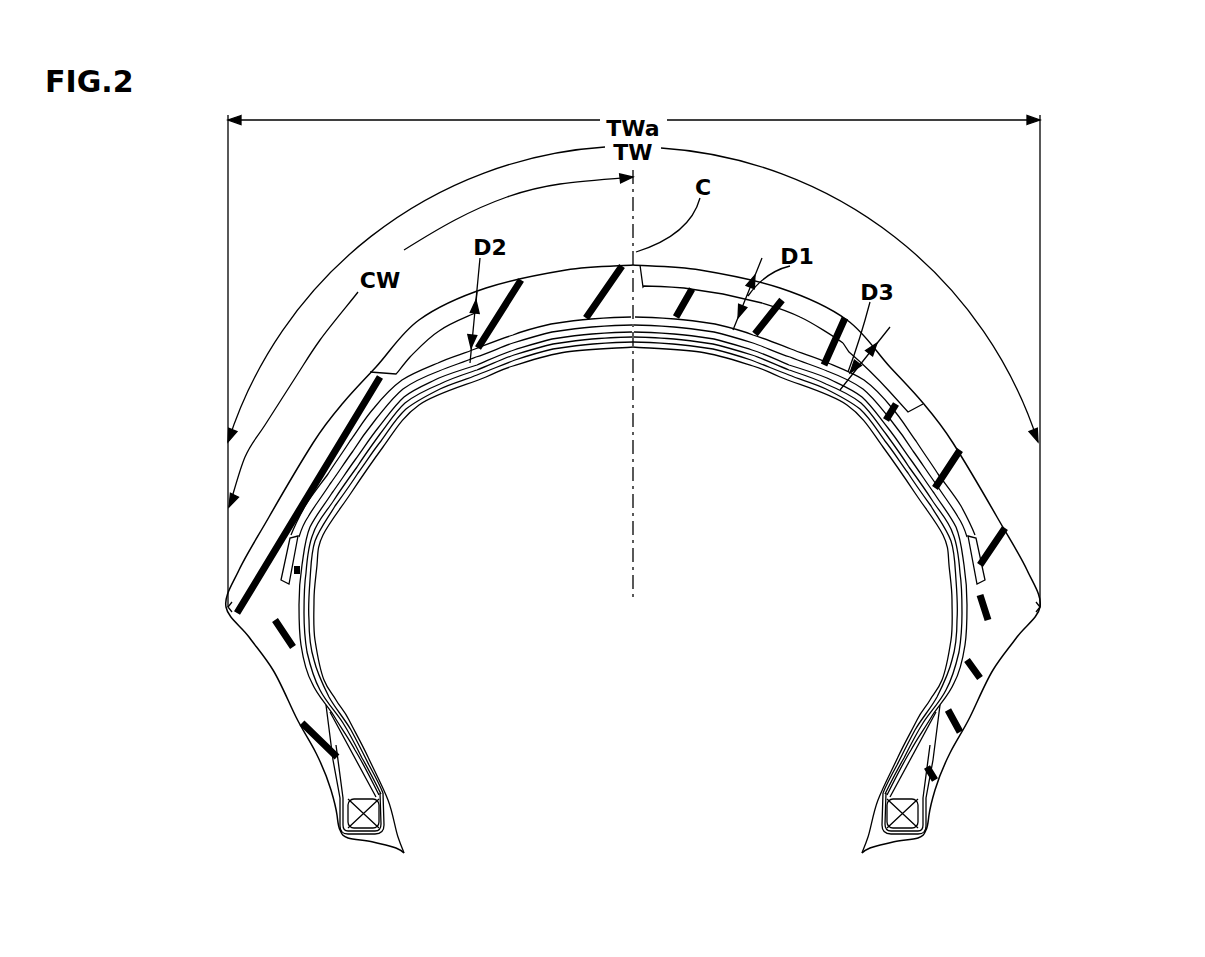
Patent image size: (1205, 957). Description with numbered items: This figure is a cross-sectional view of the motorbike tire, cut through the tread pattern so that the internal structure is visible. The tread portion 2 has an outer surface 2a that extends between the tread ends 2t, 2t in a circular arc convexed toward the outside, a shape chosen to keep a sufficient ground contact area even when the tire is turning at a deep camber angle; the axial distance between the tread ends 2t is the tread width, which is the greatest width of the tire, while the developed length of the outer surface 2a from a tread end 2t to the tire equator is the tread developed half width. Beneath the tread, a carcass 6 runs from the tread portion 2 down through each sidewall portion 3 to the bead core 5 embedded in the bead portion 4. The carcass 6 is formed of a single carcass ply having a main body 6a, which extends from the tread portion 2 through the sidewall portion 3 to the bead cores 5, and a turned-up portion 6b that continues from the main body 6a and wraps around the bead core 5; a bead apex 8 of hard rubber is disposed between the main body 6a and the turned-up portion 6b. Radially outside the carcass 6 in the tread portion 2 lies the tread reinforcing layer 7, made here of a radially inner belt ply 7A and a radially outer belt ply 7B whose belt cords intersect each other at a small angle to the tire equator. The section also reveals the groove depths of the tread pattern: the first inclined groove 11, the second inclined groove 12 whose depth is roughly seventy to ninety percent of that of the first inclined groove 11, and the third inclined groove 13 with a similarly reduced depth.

The tread portion 2 is at (945, 222).
The outer surface 2a is at (952, 432).
The tread end 2t is at (230, 607).
The sidewall portion 3 is at (1010, 720).
The bead portion 4 is at (943, 822).
The bead core 5 is at (893, 814).
The carcass 6 is at (838, 690).
The main body 6a is at (918, 742).
The turned-up portion 6b is at (946, 703).
The tread reinforcing layer 7 is at (650, 425).
The radially inner belt ply 7A is at (665, 323).
The radially outer belt ply 7B is at (707, 327).
The bead apex 8 is at (908, 790).
The first inclined groove 11 is at (693, 282).
The second inclined groove 12 is at (424, 346).
The third inclined groove 13 is at (892, 382).